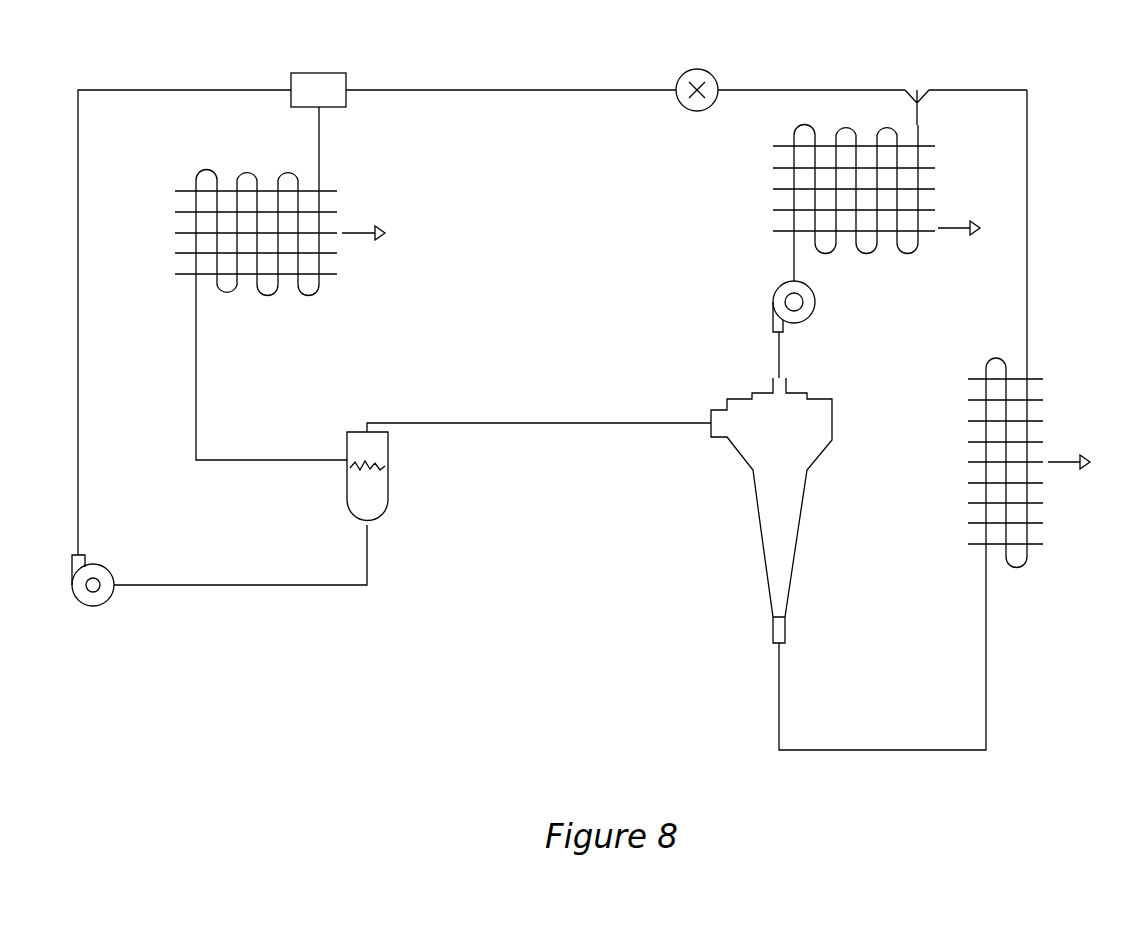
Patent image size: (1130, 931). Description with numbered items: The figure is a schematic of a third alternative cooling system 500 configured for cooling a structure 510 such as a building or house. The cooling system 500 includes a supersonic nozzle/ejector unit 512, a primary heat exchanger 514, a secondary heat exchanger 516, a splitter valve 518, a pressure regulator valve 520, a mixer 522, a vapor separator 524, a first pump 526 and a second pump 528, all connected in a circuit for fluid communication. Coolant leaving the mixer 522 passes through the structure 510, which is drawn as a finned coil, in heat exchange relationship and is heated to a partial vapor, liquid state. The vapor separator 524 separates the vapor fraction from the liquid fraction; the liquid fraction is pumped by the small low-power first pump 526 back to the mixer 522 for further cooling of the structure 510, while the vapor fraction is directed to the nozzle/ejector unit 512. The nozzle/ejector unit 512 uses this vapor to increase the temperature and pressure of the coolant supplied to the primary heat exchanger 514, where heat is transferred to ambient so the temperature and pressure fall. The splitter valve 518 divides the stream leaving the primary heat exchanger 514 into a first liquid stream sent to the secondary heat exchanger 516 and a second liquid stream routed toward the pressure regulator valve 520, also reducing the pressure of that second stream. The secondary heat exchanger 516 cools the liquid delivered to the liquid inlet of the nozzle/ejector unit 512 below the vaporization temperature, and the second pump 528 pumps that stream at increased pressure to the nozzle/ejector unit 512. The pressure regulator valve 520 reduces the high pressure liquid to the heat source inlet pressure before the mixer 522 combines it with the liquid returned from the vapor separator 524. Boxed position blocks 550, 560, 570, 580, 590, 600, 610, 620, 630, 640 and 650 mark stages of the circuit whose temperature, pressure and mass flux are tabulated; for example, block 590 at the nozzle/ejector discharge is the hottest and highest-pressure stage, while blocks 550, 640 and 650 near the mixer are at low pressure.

The cooling system 500 is at (533, 632).
The structure 510 is at (288, 292).
The supersonic nozzle/ejector unit 512 is at (757, 530).
The primary heat exchanger 514 is at (968, 470).
The secondary heat exchanger 516 is at (773, 200).
The splitter valve 518 is at (917, 88).
The pressure regulator valve 520 is at (704, 70).
The mixer 522 is at (319, 73).
The vapor separator 524 is at (385, 453).
The first pump 526 is at (110, 597).
The second pump 528 is at (773, 295).
The position block 550 is at (347, 143).
The position block 560 is at (271, 372).
The position block 570 is at (240, 555).
The position block 580 is at (539, 409).
The position block 590 is at (882, 655).
The position block 600 is at (1054, 225).
The position block 610 is at (978, 114).
The position block 620 is at (811, 70).
The position block 630 is at (817, 355).
The position block 640 is at (511, 109).
The position block 650 is at (184, 322).